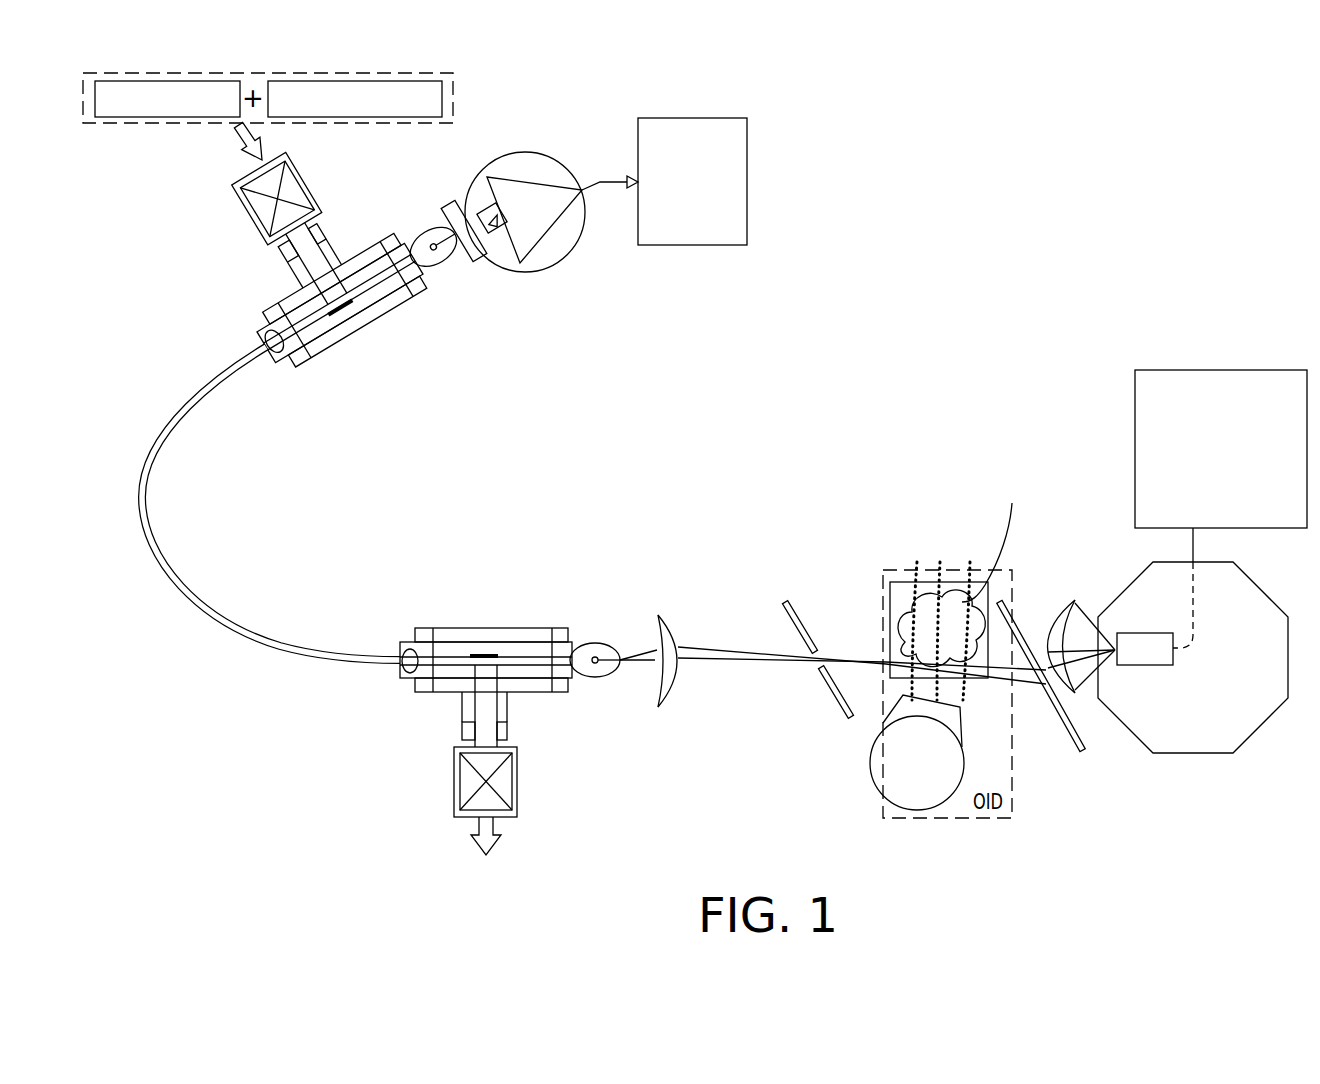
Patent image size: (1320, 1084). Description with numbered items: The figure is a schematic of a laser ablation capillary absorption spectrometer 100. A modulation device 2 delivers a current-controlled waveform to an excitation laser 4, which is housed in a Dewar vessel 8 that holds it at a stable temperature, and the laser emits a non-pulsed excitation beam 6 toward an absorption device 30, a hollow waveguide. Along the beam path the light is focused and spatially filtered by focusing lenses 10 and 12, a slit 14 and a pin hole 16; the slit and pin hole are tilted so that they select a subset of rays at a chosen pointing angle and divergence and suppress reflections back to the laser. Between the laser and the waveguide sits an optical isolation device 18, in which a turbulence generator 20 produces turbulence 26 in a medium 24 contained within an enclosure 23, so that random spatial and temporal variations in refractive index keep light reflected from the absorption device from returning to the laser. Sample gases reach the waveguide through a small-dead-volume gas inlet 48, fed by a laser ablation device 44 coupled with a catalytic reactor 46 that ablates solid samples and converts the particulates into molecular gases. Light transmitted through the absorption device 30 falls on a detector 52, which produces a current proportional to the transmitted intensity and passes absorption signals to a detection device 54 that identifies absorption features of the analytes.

The modulation device 2 is at (1212, 501).
The excitation laser 4 is at (1140, 665).
The excitation beam 6 is at (740, 662).
The Dewar vessel 8 is at (1239, 689).
The focusing lens 10 is at (1068, 605).
The focusing lens 12 is at (670, 610).
The slit 14 is at (788, 600).
The pin hole 16 is at (1077, 743).
The optical isolation device 18 is at (978, 570).
The turbulence generator 20 is at (903, 776).
The enclosure 23 is at (903, 583).
The medium 24 is at (1001, 540).
The turbulence 26 is at (907, 605).
The absorption device 30 is at (223, 620).
The laser ablation device 44 is at (160, 117).
The catalytic reactor 46 is at (300, 117).
The gas inlet 48 is at (235, 145).
The detector 52 is at (563, 260).
The detection device 54 is at (678, 236).
The laser ablation capillary absorption spectrometer 100 is at (975, 195).